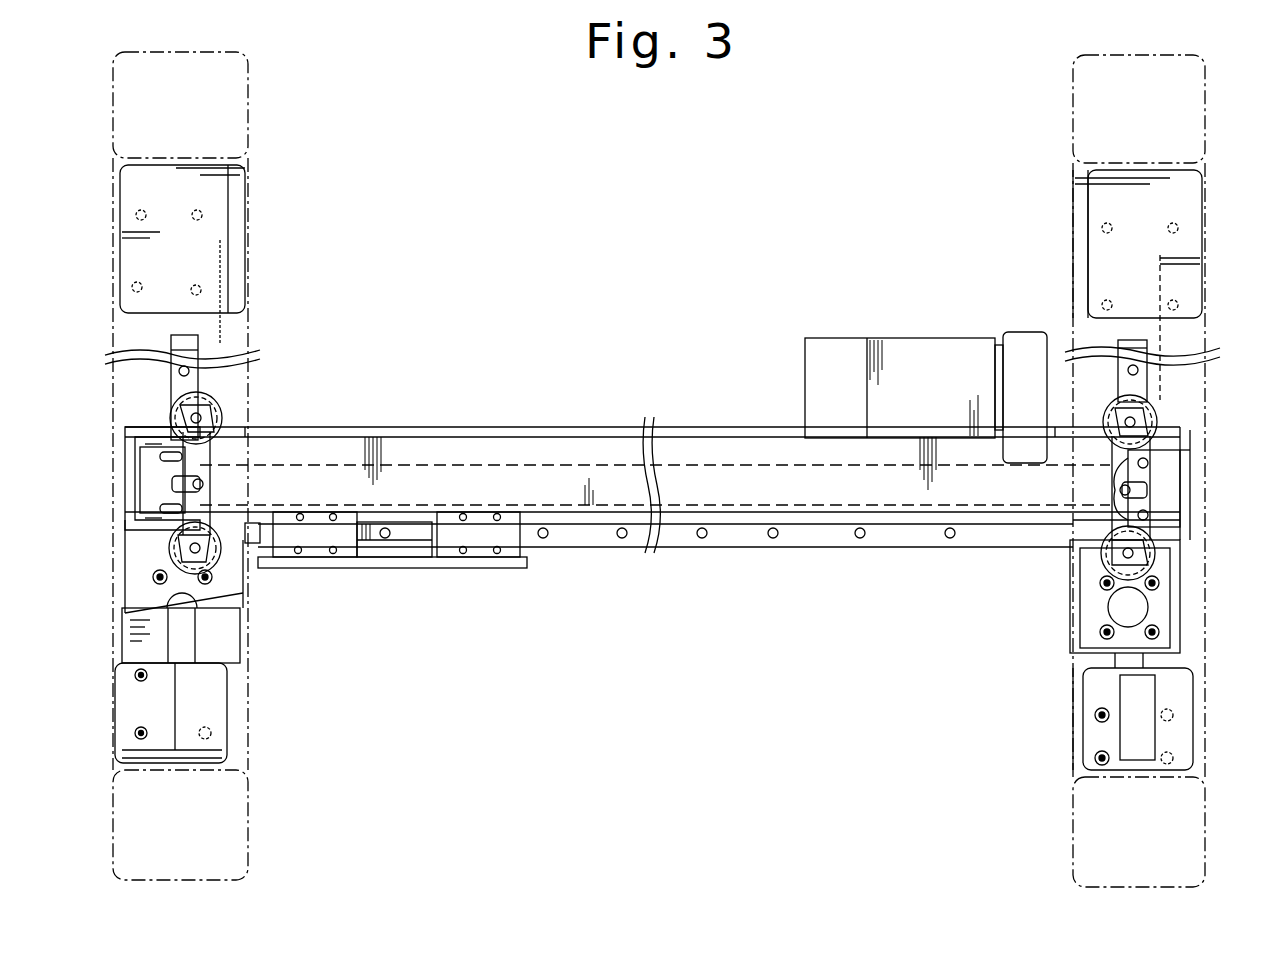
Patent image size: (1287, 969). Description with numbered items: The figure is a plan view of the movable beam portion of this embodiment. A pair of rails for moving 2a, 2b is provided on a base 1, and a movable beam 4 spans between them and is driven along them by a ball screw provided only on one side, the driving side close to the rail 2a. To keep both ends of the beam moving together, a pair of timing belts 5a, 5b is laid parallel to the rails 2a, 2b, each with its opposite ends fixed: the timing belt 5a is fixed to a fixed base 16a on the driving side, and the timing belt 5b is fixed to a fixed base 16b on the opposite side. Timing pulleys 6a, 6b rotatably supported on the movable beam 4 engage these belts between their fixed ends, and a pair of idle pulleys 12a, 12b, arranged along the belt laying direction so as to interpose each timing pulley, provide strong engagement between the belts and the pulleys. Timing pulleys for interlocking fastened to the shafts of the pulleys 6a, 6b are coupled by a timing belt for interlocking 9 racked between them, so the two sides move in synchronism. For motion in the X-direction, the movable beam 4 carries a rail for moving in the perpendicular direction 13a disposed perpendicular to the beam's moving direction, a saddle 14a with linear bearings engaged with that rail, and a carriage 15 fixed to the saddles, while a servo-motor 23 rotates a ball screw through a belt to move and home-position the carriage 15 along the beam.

The base 1 is at (232, 132).
The rail for moving 2a is at (1127, 382).
The rail for moving 2b is at (190, 380).
The movable beam 4 is at (735, 447).
The timing belt 5a is at (1160, 385).
The timing belt 5b is at (222, 625).
The timing pulley 6a is at (1135, 490).
The timing pulley 6b is at (205, 483).
The timing belt for interlocking 9 is at (553, 465).
The idle pulleys 12a is at (1157, 418).
The idle pulleys 12b is at (218, 413).
The rail for moving in the perpendicular direction 13a is at (592, 534).
The saddle 14a is at (313, 541).
The carriage 15 is at (370, 561).
The fixed base 16a is at (1100, 260).
The fixed base 16b is at (207, 232).
The servo-motor 23 is at (918, 362).